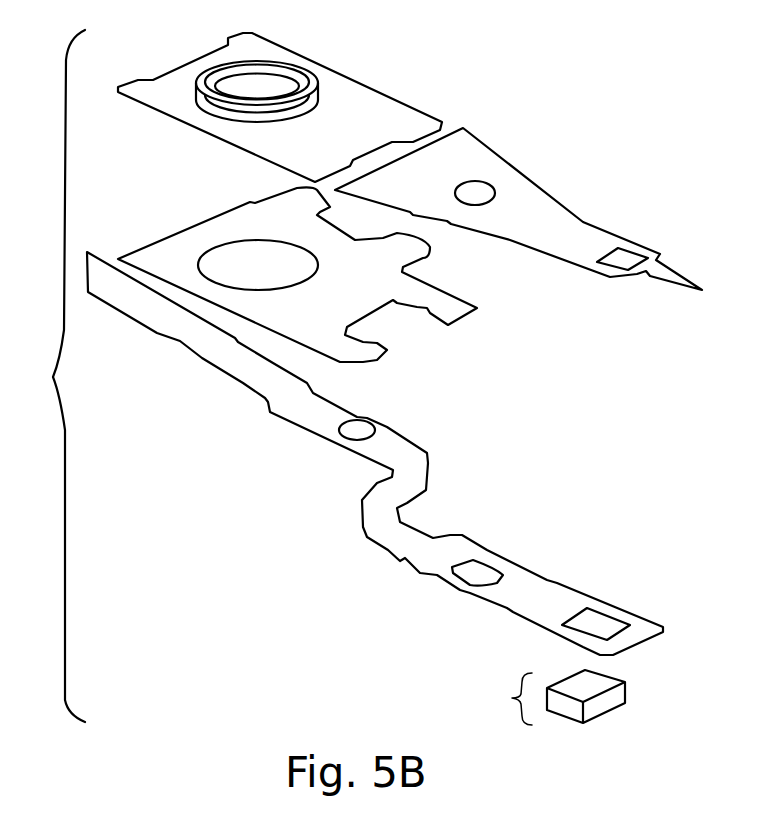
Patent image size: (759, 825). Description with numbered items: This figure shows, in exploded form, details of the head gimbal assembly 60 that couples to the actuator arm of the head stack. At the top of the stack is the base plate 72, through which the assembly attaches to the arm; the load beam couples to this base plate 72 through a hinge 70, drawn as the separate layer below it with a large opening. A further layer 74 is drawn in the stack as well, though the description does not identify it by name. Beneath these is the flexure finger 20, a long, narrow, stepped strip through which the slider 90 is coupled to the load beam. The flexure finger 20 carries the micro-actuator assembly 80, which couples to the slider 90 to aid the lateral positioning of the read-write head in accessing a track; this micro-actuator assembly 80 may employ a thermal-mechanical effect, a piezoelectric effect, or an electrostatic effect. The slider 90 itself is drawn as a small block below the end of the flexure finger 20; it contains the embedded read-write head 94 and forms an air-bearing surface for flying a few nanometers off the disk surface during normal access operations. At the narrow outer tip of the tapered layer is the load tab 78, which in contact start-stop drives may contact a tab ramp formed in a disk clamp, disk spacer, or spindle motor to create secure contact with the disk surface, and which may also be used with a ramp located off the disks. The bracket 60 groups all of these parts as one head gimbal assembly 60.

The head gimbal assembly 60 is at (52, 376).
The base plate 72 is at (433, 112).
The tapered conductor layer 74 is at (588, 222).
The load tab 78 is at (688, 287).
The hinge 70 is at (447, 291).
The flexure finger 20 is at (297, 432).
The micro-actuator assembly 80 is at (570, 617).
The slider 90 is at (502, 699).
The read-write head 94 is at (610, 713).